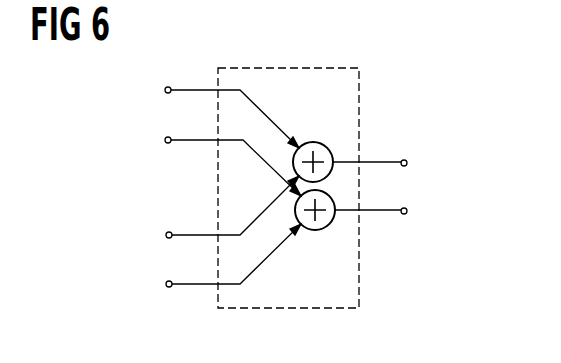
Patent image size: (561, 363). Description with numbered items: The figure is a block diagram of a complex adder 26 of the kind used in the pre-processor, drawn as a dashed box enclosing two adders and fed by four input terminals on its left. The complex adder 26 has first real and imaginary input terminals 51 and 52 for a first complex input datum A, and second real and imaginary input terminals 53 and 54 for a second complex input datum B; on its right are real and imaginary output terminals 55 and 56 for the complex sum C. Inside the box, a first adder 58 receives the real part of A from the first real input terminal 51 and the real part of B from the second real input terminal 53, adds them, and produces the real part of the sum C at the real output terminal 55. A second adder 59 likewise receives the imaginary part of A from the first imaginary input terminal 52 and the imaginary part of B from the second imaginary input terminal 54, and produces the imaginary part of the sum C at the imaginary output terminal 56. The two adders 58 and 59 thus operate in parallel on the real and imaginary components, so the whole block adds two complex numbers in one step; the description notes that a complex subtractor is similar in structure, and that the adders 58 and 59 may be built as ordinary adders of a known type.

The complex adder 26 is at (306, 68).
The first real input terminal 51 is at (166, 88).
The first imaginary input terminal 52 is at (165, 138).
The second real input terminal 53 is at (166, 233).
The second imaginary input terminal 54 is at (166, 282).
The real output terminal 55 is at (407, 165).
The imaginary output terminal 56 is at (407, 213).
The first adder 58 is at (316, 143).
The second adder 59 is at (318, 230).